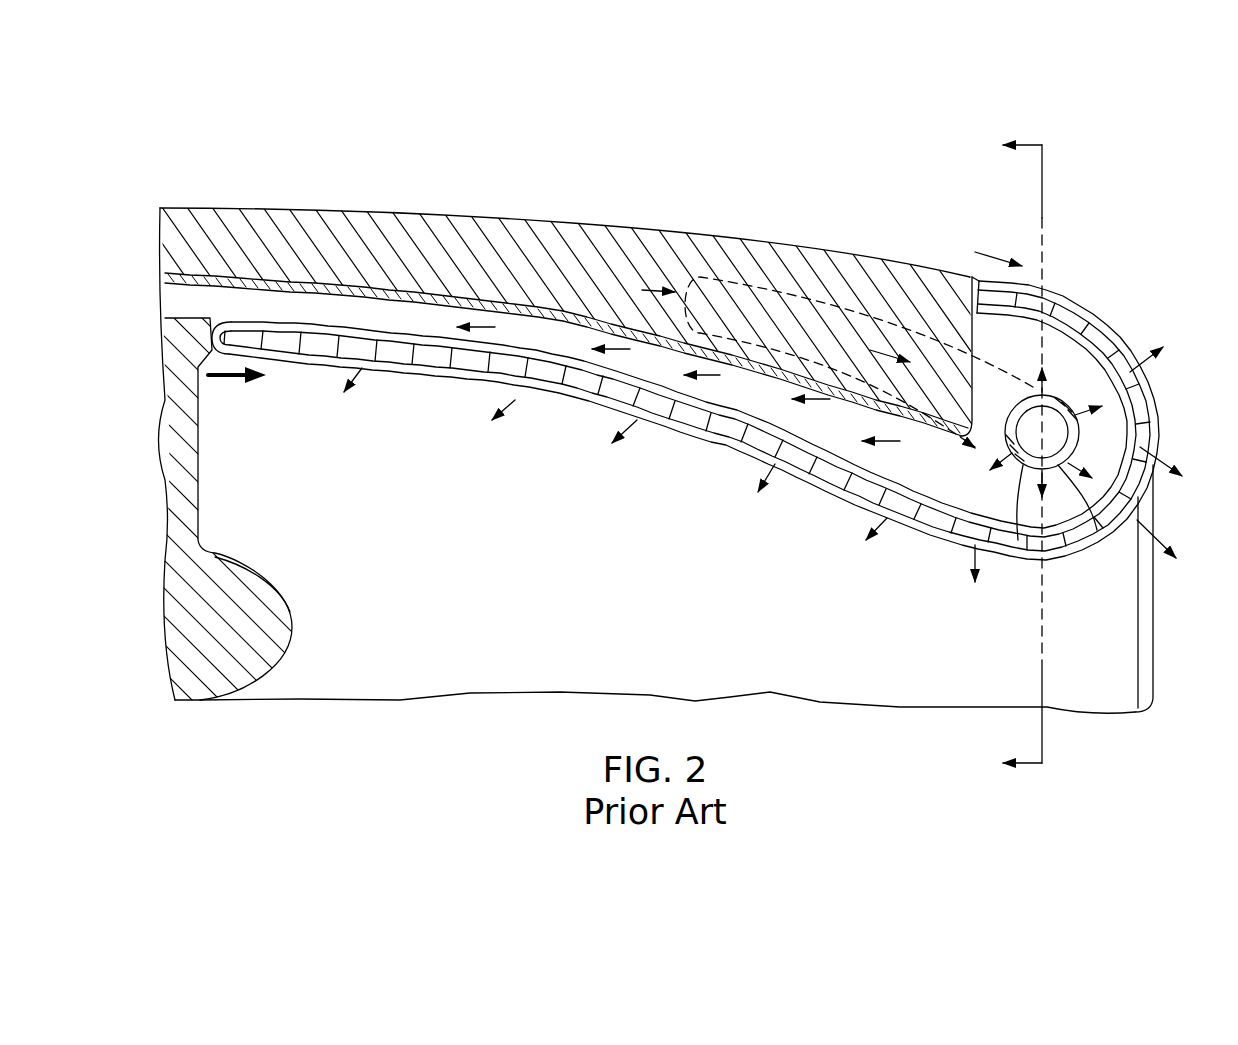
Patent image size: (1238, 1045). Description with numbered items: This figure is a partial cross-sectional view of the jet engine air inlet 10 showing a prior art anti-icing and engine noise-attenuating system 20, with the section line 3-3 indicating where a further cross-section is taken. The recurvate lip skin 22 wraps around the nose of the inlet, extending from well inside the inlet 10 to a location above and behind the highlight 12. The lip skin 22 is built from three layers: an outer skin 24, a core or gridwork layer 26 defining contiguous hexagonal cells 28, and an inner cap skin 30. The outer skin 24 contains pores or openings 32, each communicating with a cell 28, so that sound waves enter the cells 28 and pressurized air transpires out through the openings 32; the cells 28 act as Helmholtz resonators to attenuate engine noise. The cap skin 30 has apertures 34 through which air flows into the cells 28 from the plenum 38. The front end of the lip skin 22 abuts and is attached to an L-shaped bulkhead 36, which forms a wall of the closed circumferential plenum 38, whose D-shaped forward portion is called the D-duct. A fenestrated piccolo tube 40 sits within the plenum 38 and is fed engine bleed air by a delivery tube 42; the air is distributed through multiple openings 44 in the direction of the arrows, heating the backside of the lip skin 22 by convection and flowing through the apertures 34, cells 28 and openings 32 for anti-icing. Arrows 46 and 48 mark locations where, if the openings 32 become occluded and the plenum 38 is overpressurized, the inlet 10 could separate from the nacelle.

The section line 3- 3 is at (1006, 460).
The jet engine air inlet 10 is at (616, 210).
The highlight 12 is at (1155, 615).
The anti-icing and engine noise-attenuating system 20 is at (715, 367).
The lip skin 22 is at (797, 500).
The outer skin 24 is at (1125, 338).
The core layer 26 is at (717, 436).
The hexagonal cells 28 is at (1130, 371).
The cap skin 30 is at (1095, 318).
The openings 32 is at (545, 398).
The apertures 34 is at (677, 405).
The L-shaped bulkhead 36 is at (982, 332).
The plenum 38 is at (945, 500).
The piccolo tube 40 is at (1018, 540).
The delivery tube 42 is at (858, 305).
The air distribution openings 44 is at (985, 475).
The arrow 46 is at (990, 250).
The arrow 48 is at (228, 380).